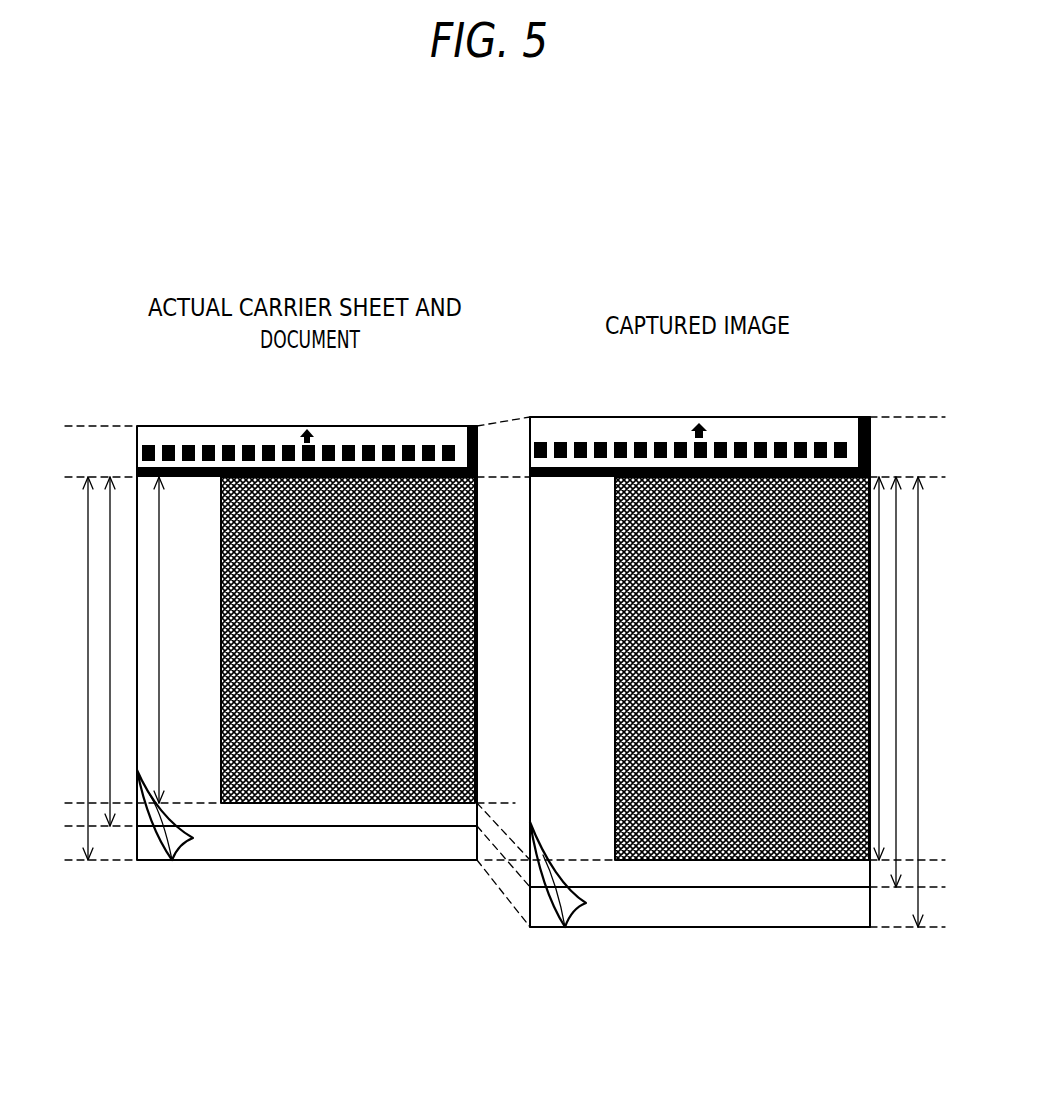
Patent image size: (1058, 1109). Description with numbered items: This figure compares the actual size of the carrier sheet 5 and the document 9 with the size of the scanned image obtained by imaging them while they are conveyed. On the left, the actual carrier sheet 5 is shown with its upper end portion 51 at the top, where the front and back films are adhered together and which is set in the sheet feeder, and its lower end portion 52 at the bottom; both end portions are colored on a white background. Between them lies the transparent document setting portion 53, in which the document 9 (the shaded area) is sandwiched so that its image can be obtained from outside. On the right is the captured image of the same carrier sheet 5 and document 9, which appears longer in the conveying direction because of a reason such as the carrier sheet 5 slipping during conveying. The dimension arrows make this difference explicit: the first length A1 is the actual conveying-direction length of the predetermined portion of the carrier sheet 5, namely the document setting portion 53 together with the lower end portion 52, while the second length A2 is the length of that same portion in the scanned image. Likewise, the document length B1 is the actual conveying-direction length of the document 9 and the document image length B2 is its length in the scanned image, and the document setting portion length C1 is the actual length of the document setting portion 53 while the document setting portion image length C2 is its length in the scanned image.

The carrier sheet 5 is at (430, 427).
The upper end portion 51 is at (347, 438).
The document 9 is at (437, 702).
The lower end portion 52 is at (357, 850).
The document setting portion 53 is at (188, 783).
The first length A1 is at (88, 527).
The document length B1 is at (159, 638).
The document setting portion length C1 is at (110, 707).
The second length A2 is at (918, 538).
The document image length B2 is at (879, 667).
The document setting portion image length C2 is at (897, 740).